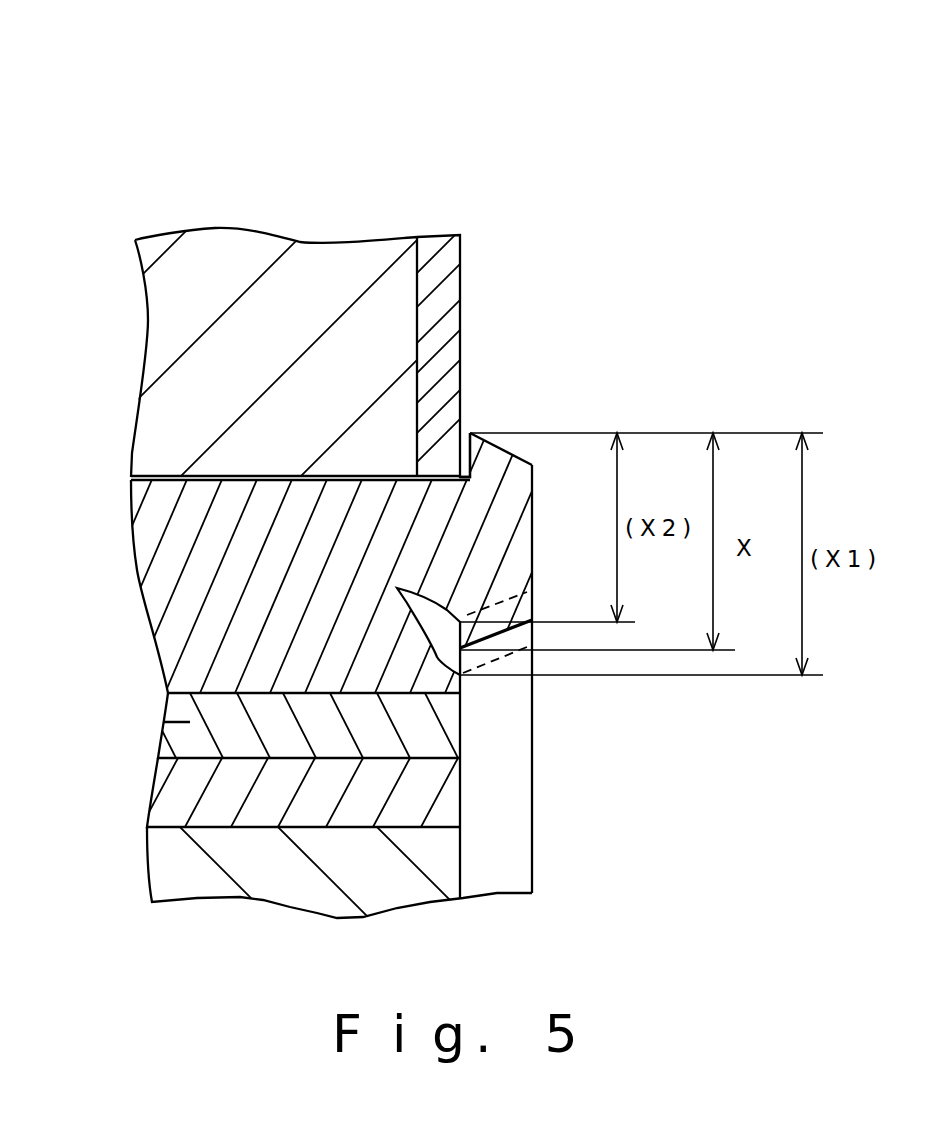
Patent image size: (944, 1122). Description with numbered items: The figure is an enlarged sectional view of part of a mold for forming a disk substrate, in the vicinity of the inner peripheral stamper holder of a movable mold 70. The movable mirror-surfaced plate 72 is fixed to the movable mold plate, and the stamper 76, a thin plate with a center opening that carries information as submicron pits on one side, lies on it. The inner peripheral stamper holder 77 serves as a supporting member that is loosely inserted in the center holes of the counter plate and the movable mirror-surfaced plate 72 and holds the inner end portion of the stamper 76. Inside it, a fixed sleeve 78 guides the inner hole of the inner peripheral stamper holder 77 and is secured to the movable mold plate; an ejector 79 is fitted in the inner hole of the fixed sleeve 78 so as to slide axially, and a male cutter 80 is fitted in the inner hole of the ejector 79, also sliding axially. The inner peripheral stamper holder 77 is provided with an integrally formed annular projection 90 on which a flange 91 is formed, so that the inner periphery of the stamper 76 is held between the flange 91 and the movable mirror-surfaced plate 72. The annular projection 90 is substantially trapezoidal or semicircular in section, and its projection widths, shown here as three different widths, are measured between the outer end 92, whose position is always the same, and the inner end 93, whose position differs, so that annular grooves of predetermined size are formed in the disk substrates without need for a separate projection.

The movable mold 70 is at (395, 174).
The movable mirror-surfaced plate 72 is at (168, 337).
The stamper 76 is at (450, 307).
The inner peripheral stamper holder 77 is at (157, 540).
The fixed sleeve 78 is at (192, 730).
The ejector 79 is at (178, 792).
The male cutter 80 is at (180, 862).
The annular projection 90 is at (497, 518).
The flange 91 is at (500, 468).
The outer end 92 is at (469, 433).
The inner end 93 is at (397, 588).